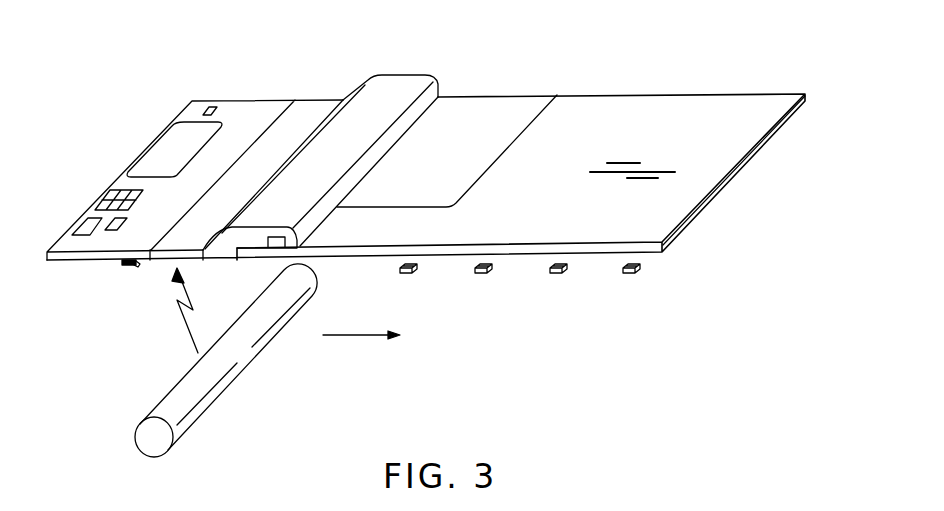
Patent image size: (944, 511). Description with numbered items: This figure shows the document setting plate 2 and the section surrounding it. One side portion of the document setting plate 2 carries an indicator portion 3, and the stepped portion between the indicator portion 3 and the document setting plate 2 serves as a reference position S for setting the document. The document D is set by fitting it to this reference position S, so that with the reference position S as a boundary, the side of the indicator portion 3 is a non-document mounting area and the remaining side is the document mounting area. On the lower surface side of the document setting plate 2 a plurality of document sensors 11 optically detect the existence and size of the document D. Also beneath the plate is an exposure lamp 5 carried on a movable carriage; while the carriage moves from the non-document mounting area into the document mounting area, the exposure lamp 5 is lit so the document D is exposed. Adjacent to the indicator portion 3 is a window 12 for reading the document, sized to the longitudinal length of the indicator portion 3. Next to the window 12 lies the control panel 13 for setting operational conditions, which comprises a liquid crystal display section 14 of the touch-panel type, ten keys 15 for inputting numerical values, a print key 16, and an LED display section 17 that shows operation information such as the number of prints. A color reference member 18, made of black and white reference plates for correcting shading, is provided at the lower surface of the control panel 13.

The document setting plate 2 is at (695, 100).
The indicator portion 3 is at (400, 85).
The exposure lamp 5 is at (212, 402).
The document sensors 11 is at (416, 274).
The window 12 is at (317, 106).
The control panel 13 is at (253, 106).
The liquid crystal display section 14 is at (170, 138).
The ten keys 15 is at (110, 195).
The print key 16 is at (83, 226).
The LED display section 17 is at (115, 232).
The color reference member 18 is at (126, 266).
The document D is at (479, 99).
The reference position S is at (447, 71).